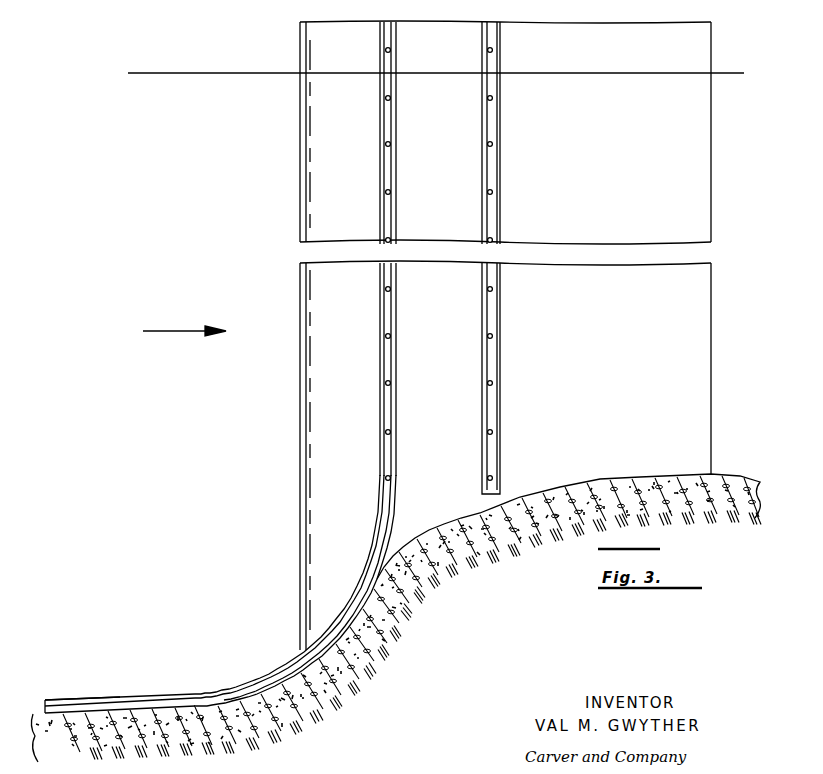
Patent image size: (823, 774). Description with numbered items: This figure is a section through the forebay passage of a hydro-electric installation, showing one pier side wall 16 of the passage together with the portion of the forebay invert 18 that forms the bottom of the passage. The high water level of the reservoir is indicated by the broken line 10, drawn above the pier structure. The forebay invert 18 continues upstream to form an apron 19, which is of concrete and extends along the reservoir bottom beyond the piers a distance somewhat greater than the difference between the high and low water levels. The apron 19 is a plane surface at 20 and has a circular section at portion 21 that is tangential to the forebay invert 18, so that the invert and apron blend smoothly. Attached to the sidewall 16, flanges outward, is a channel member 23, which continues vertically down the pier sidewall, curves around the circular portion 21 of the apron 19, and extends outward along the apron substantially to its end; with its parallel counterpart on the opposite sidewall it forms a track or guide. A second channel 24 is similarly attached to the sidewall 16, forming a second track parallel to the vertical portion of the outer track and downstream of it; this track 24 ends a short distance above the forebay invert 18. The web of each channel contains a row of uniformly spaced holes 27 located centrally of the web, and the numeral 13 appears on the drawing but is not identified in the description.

The high water line 10 is at (154, 73).
The wall panel 13 is at (570, 30).
The pier side wall 16 is at (700, 163).
The forebay invert 18 is at (562, 487).
The apron 19 is at (163, 707).
The plane surface 20 is at (115, 700).
The circular portion 21 is at (349, 630).
The channel member 23 is at (383, 373).
The channel 24 is at (491, 368).
The holes 27 is at (490, 147).